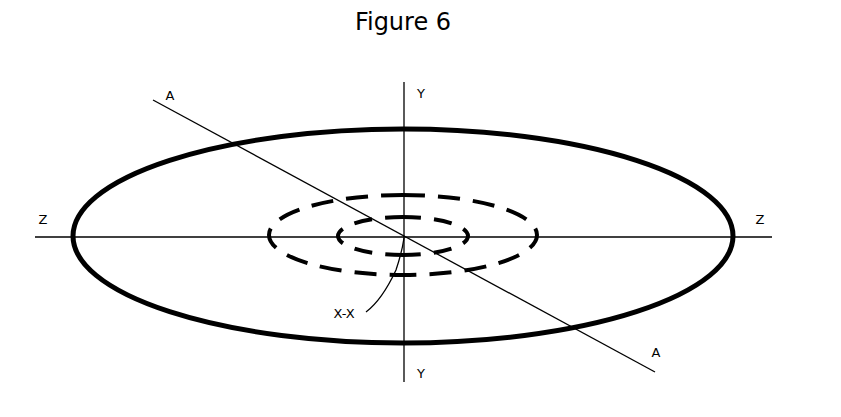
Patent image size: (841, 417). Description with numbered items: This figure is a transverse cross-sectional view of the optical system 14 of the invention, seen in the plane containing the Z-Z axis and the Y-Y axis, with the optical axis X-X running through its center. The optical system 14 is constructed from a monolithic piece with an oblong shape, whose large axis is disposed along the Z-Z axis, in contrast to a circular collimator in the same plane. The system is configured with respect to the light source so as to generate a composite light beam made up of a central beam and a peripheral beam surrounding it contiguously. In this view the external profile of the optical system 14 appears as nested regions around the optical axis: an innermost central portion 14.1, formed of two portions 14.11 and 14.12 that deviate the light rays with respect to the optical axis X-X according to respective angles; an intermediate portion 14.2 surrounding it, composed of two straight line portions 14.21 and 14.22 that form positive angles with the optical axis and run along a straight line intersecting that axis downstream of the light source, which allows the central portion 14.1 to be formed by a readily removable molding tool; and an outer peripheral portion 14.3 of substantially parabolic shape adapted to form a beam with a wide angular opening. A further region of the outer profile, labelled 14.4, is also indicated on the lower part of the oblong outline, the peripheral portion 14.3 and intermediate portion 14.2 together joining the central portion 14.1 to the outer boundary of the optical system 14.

The optical system 14 is at (414, 204).
The central portion 14.1 is at (365, 174).
The first central portion 14.11 is at (346, 236).
The second central portion 14.12 is at (441, 237).
The intermediate portion 14.2 is at (391, 280).
The first straight line portion 14.21 is at (272, 237).
The second straight line portion 14.22 is at (512, 237).
The peripheral portion 14.3 is at (362, 152).
The lower lens region 14.4 is at (676, 277).